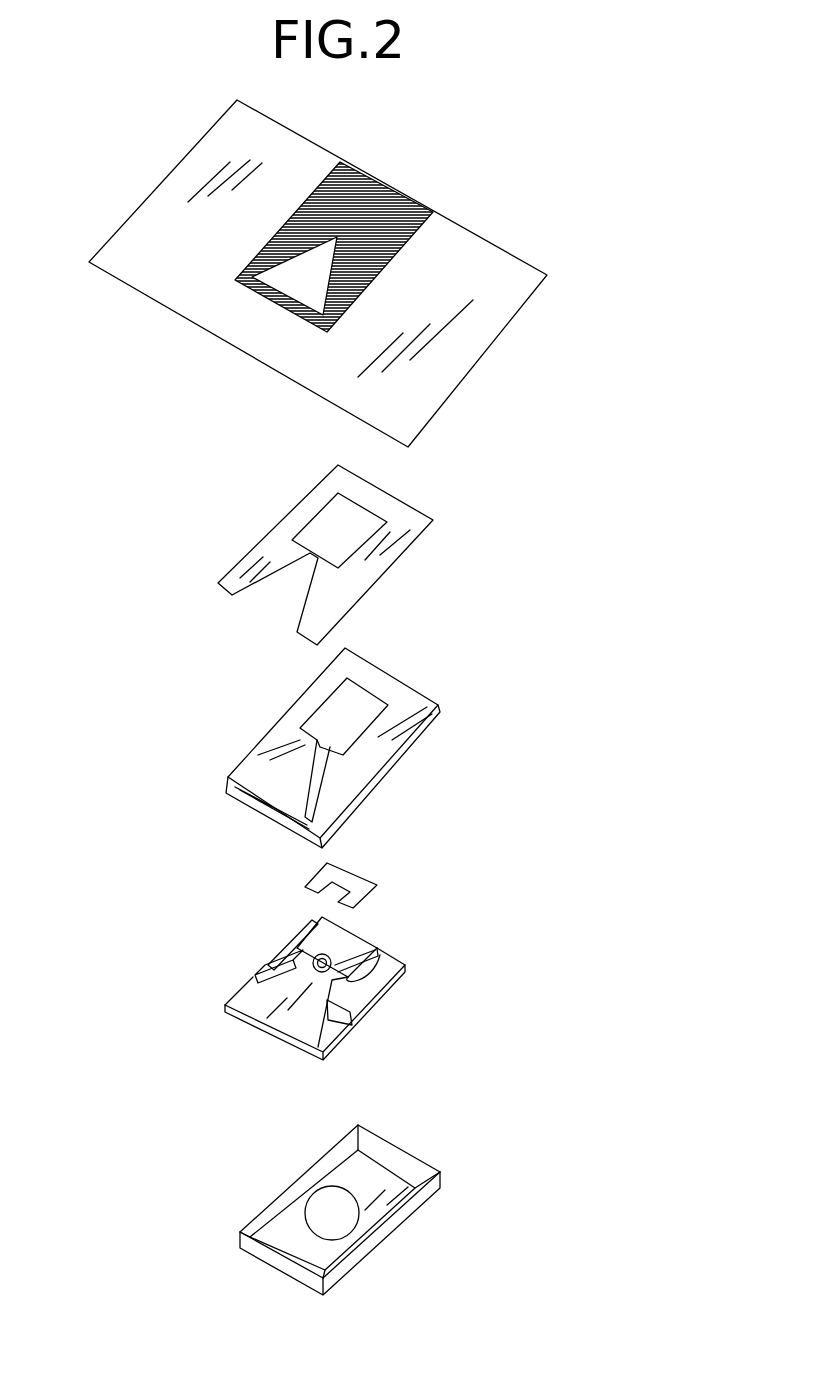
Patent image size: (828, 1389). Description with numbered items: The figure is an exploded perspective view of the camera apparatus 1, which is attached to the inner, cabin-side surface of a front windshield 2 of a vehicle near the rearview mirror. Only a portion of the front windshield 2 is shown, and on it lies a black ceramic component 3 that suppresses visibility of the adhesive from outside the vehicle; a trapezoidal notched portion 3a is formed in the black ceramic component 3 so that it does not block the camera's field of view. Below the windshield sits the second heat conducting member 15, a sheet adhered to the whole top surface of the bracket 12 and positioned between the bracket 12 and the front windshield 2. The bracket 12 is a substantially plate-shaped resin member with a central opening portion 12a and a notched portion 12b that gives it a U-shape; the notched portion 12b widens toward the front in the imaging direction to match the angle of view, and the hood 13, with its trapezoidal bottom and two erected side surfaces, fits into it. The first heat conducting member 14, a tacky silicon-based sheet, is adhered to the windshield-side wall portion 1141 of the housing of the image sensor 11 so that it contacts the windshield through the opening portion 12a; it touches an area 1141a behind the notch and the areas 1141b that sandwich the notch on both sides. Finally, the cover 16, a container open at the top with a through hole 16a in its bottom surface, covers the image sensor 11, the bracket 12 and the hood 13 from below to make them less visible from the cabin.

The camera apparatus 1 is at (613, 792).
The front windshield 2 is at (515, 230).
The black ceramic component 3 is at (367, 195).
The notched portion 3a is at (302, 267).
The image sensor 11 is at (405, 940).
The bracket 12 is at (420, 660).
The opening portion 12a is at (330, 715).
The notched portion 12b is at (280, 787).
The hood 13 is at (295, 787).
The first heat conducting member 14 is at (297, 865).
The second heat conducting member 15 is at (422, 495).
The cover 16 is at (415, 1133).
The through hole 16a is at (327, 1205).
The windshield-side wall portion 1141 is at (303, 958).
The area 1141a is at (338, 940).
The areas 1141b is at (310, 937).